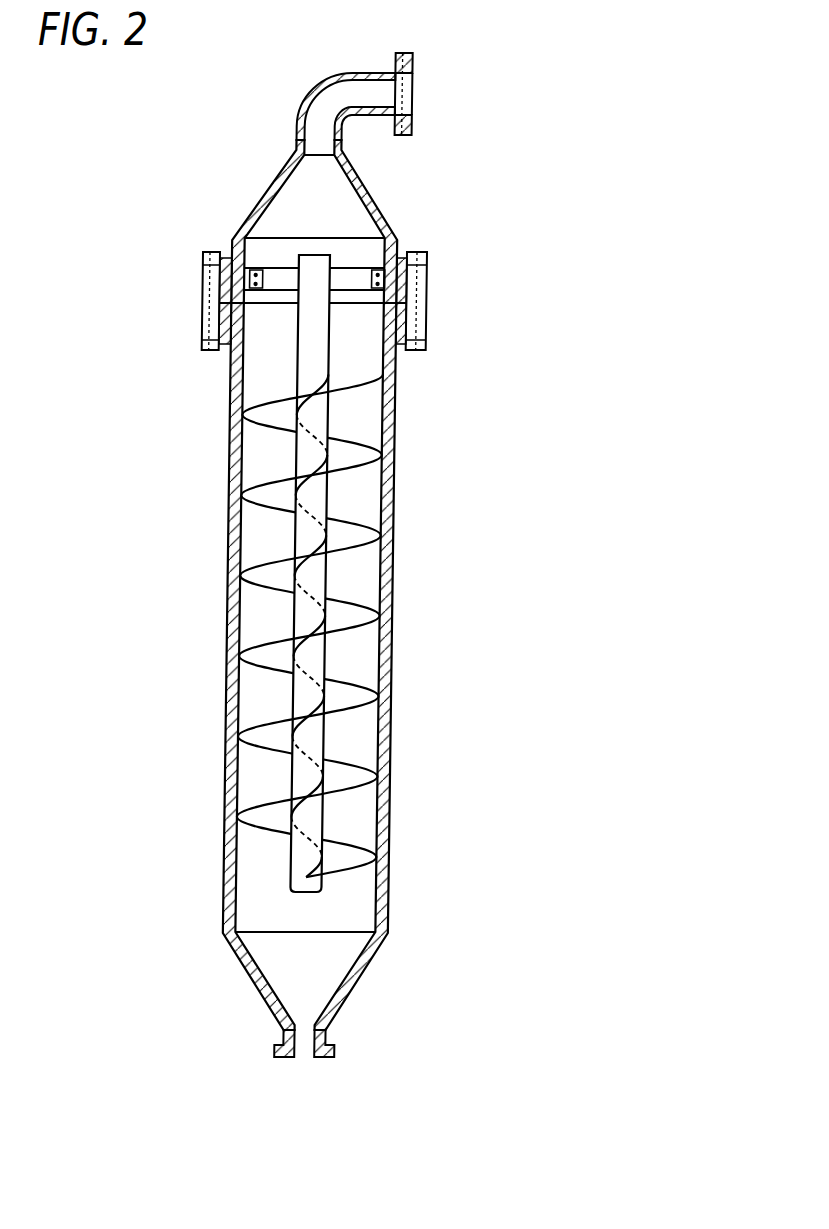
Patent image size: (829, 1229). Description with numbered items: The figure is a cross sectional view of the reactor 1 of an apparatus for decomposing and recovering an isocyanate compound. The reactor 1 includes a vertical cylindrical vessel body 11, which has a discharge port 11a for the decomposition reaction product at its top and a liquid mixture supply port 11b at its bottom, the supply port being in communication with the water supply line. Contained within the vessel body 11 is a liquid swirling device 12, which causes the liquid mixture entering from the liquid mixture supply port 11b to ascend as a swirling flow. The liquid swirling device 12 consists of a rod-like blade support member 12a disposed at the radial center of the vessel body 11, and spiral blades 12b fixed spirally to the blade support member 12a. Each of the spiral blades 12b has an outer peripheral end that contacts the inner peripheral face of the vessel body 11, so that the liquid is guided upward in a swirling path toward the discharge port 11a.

The reactor 1 is at (446, 287).
The vessel body 11 is at (406, 526).
The discharge port 11a is at (405, 93).
The liquid mixture supply port 11b is at (305, 1060).
The liquid swirling device 12 is at (261, 573).
The blade support member 12a is at (292, 373).
The spiral blades 12b is at (268, 733).